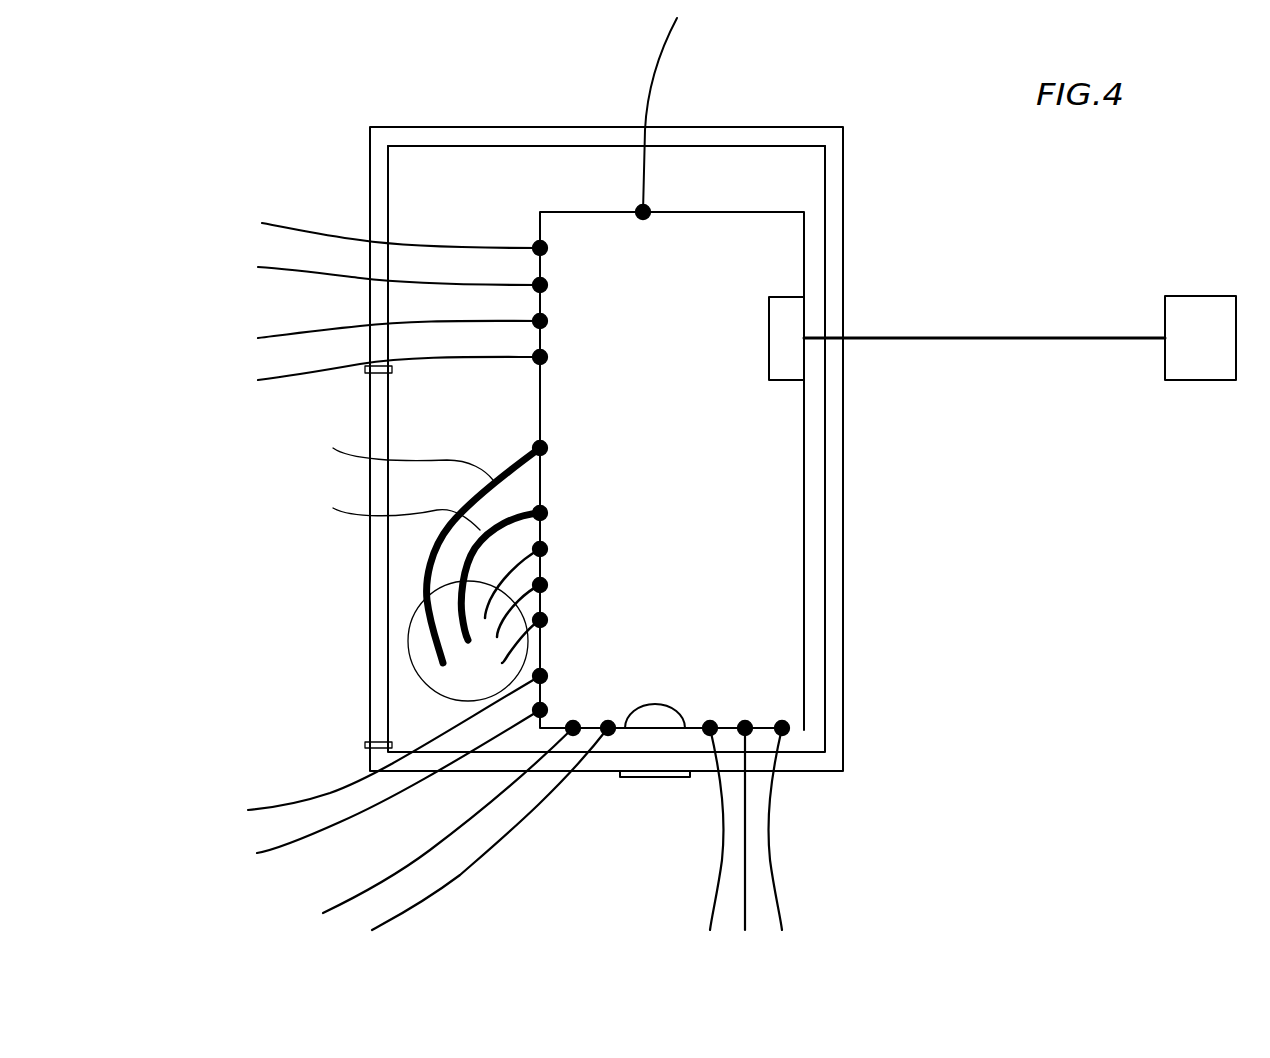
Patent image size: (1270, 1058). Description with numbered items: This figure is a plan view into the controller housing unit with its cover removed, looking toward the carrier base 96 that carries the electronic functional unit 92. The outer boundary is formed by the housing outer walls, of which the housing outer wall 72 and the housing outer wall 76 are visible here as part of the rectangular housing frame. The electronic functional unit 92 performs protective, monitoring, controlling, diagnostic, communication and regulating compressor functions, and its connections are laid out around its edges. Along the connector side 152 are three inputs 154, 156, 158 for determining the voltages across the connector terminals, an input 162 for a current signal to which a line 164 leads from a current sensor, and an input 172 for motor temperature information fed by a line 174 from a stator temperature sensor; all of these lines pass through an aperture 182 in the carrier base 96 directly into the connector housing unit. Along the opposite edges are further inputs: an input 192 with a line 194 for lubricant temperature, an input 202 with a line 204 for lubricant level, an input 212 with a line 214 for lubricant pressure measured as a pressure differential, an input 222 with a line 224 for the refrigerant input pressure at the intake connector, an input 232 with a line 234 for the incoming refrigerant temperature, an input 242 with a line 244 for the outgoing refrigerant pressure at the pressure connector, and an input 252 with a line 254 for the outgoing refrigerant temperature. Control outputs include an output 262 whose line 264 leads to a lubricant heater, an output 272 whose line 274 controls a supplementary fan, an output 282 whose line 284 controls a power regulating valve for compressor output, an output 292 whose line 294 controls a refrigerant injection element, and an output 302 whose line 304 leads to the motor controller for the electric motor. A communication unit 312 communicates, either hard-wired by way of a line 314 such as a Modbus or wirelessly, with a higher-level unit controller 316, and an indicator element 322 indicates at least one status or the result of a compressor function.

The housing outer wall 72 is at (584, 114).
The housing outer wall 76 is at (782, 163).
The carrier base 96 is at (425, 170).
The electronic functional unit 92 is at (754, 497).
The connector side 152 is at (540, 400).
The input 154 is at (548, 549).
The input 156 is at (548, 585).
The input 158 is at (548, 620).
The input 162 is at (548, 513).
The line 164 is at (384, 507).
The input 172 is at (548, 448).
The line 174 is at (392, 455).
The aperture 182 is at (450, 690).
The input 192 is at (782, 720).
The line 194 is at (775, 855).
The input 202 is at (745, 720).
The line 204 is at (747, 903).
The input 212 is at (710, 720).
The line 214 is at (713, 887).
The input 222 is at (548, 248).
The line 224 is at (287, 228).
The input 232 is at (548, 285).
The line 234 is at (277, 268).
The input 242 is at (548, 321).
The line 244 is at (287, 330).
The input 252 is at (548, 357).
The line 254 is at (280, 377).
The output 262 is at (548, 676).
The line 264 is at (282, 803).
The output 272 is at (548, 710).
The line 274 is at (280, 842).
The output 282 is at (572, 737).
The line 284 is at (343, 880).
The output 292 is at (608, 737).
The line 294 is at (412, 883).
The output 302 is at (650, 208).
The line 304 is at (660, 65).
The communication unit 312 is at (775, 337).
The line 314 is at (985, 335).
The unit controller 316 is at (1201, 315).
The indicator element 322 is at (652, 740).